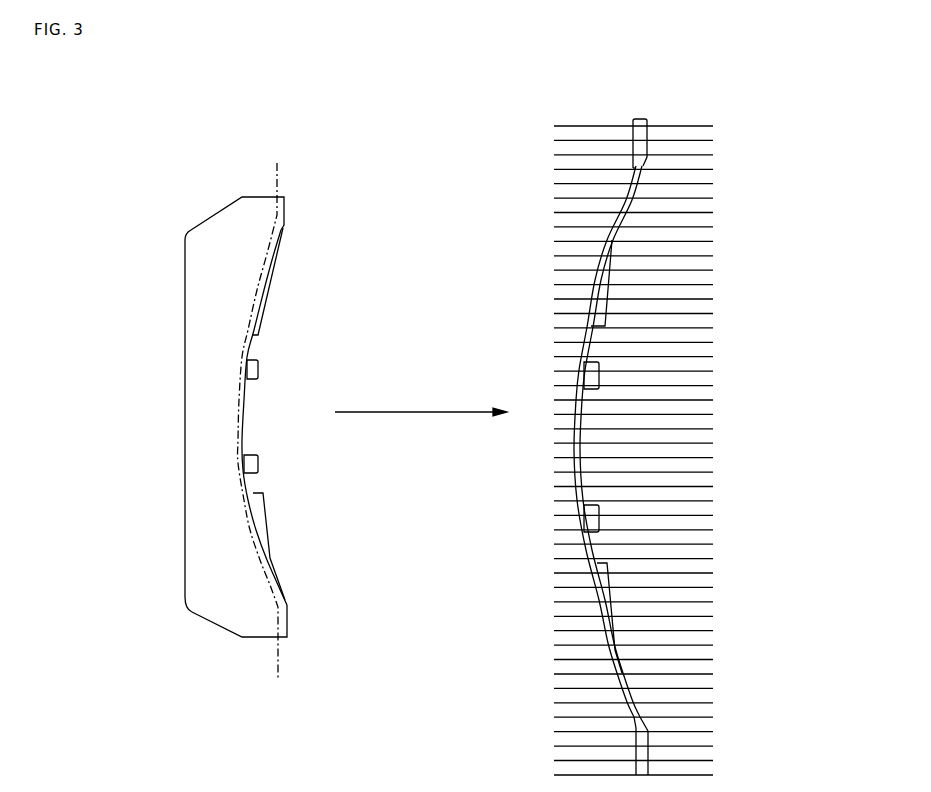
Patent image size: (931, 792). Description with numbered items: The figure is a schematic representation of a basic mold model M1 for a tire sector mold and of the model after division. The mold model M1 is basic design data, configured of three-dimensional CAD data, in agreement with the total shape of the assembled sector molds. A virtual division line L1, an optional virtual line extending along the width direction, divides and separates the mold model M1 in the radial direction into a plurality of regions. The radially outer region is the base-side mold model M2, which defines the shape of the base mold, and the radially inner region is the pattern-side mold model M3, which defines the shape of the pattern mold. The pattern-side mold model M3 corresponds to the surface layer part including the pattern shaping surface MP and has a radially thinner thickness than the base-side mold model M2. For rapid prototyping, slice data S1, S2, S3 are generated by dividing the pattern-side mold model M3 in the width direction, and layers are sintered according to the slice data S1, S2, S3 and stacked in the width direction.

The mold model M1 is at (313, 123).
The base-side mold model M2 is at (232, 222).
The pattern-side mold model M3 is at (285, 205).
The virtual division line L1 is at (260, 413).
The pattern shaping surface MP is at (242, 420).
The slice data S1 is at (713, 767).
The slice data S2 is at (713, 752).
The slice data S3 is at (713, 737).